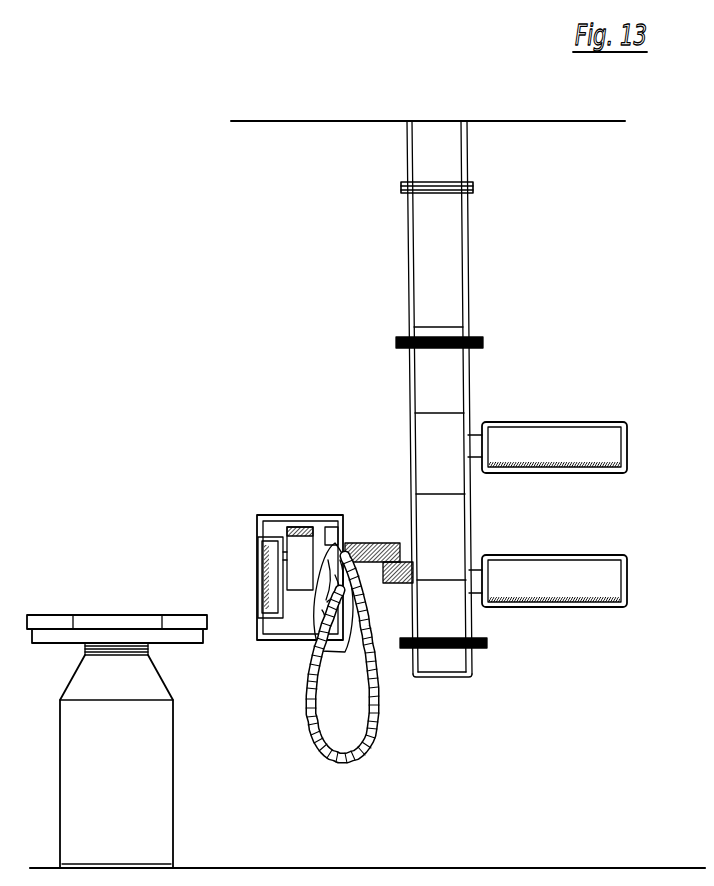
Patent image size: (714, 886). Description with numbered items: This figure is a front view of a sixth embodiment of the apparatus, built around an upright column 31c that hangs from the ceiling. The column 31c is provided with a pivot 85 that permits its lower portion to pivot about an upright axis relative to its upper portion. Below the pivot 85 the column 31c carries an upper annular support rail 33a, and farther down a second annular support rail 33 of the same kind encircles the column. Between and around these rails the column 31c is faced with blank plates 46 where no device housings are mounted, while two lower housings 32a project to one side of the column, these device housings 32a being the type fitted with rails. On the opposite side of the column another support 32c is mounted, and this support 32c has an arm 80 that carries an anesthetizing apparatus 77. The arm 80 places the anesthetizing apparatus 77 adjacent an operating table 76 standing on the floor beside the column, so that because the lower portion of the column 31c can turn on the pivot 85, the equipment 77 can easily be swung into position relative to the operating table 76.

The column 31c is at (470, 248).
The pivot 85 is at (474, 188).
The upper annular support rail 33a is at (408, 337).
The blank plates 46 is at (439, 438).
The lower housings 32a is at (548, 435).
The lower clamp band 33 is at (484, 648).
The anesthetizing apparatus 77 is at (282, 515).
The arm 80 is at (367, 543).
The support 32c is at (408, 655).
The operating table 76 is at (118, 608).